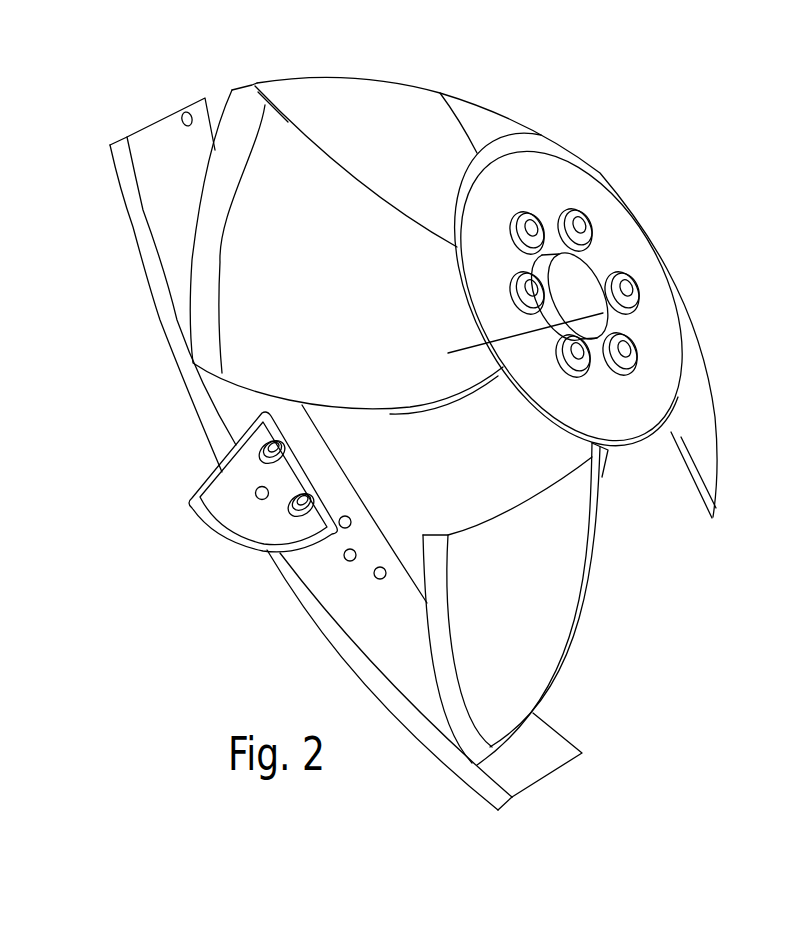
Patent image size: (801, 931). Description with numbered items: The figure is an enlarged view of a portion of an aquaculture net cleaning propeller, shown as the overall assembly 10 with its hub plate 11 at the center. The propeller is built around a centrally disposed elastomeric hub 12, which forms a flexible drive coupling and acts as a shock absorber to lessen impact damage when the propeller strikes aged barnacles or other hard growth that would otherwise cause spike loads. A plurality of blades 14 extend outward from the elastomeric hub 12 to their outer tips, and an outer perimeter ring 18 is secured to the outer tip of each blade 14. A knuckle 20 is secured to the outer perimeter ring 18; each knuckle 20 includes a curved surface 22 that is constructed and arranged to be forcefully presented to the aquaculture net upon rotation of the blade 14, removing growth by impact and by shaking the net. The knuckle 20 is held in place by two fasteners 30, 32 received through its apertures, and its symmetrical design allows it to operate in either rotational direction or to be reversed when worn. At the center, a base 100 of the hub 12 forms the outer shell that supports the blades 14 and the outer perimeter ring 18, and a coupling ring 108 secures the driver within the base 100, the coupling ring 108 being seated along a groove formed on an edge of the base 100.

The fan 10 is at (602, 125).
The hub plate 11 is at (685, 295).
The elastomeric hub 12 is at (583, 288).
The blade 14 is at (540, 605).
The outer perimeter ring 18 is at (440, 760).
The knuckle 20 is at (242, 508).
The curved surface 22 is at (233, 548).
The fastener 30 is at (257, 450).
The fastener 32 is at (290, 543).
The base 100 is at (703, 397).
The coupling ring 108 is at (638, 433).